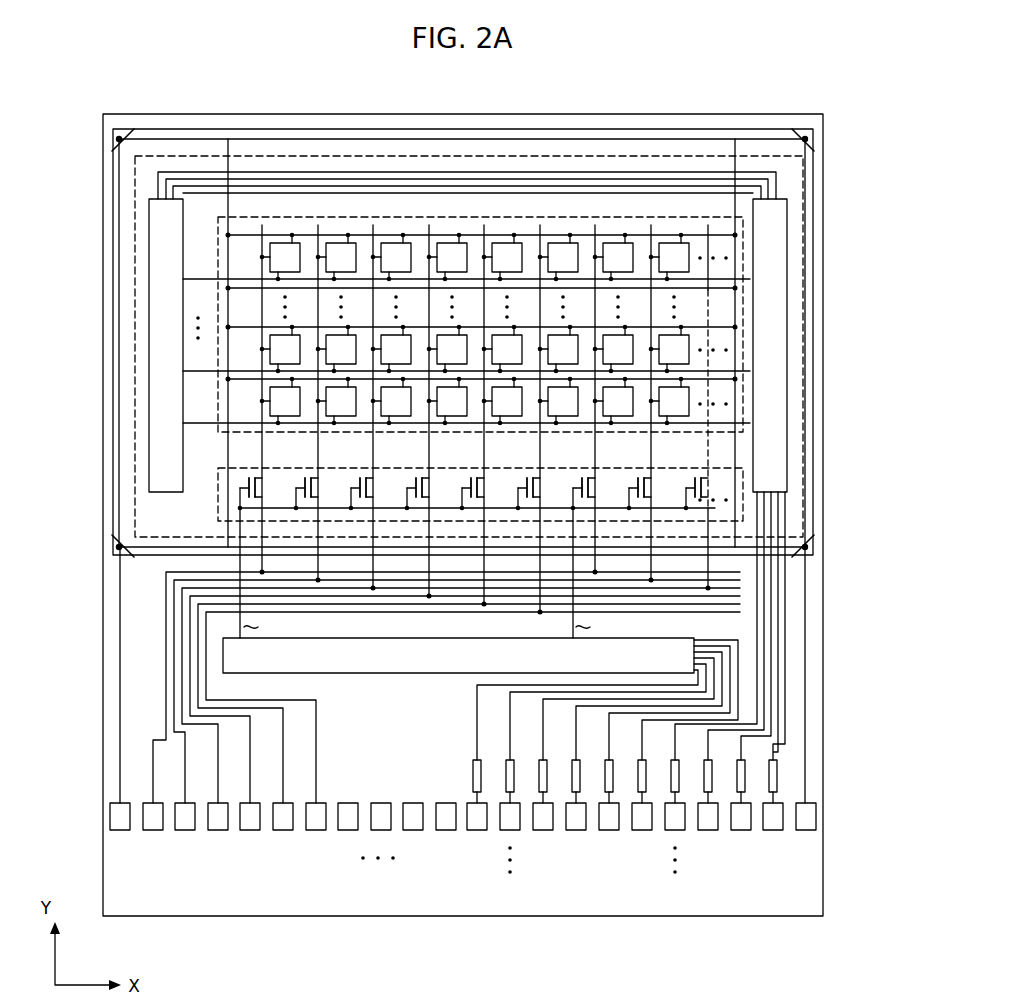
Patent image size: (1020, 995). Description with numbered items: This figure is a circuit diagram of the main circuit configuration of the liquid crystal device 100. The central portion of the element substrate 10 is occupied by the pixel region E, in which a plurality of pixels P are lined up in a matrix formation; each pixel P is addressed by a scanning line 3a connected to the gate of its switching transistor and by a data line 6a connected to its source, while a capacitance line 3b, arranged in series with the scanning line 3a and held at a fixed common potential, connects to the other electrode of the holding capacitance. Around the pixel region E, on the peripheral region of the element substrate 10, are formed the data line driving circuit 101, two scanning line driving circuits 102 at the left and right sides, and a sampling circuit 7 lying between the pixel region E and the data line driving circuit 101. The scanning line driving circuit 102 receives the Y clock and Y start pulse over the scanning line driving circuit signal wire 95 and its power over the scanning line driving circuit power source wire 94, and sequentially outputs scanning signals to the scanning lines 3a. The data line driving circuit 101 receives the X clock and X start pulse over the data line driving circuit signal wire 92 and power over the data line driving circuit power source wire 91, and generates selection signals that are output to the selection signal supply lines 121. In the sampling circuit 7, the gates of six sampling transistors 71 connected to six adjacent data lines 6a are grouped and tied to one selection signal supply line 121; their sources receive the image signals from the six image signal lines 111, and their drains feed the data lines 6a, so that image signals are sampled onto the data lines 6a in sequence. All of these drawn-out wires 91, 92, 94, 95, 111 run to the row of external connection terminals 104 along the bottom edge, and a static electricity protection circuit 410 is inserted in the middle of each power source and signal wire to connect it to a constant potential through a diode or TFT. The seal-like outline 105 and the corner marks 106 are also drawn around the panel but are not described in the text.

The liquid crystal device 100 is at (814, 96).
The element substrate 10 is at (471, 113).
The vertical conduction portion 106 is at (119, 136).
The scanning line driving circuit 102 is at (147, 228).
The capacitance line 3b is at (249, 234).
The scanning line 3a is at (217, 431).
The pixel P is at (395, 242).
The pixel region E is at (563, 216).
The seal material 105 is at (641, 186).
The data line 6a is at (262, 447).
The sampling transistor 71 is at (274, 482).
The image signal line 111 is at (206, 682).
The selection signal supply line 121 is at (240, 531).
The sampling circuit 7 is at (745, 511).
The scanning line driving circuit signal wire 95 is at (785, 613).
The data line driving circuit 101 is at (356, 674).
The external connection terminal 104 is at (318, 801).
The data line driving circuit power source wire 91 is at (476, 753).
The data line driving circuit signal wire 92 is at (509, 753).
The scanning line driving circuit power source wire 94 is at (641, 753).
The static electricity protection circuit 410 is at (605, 788).